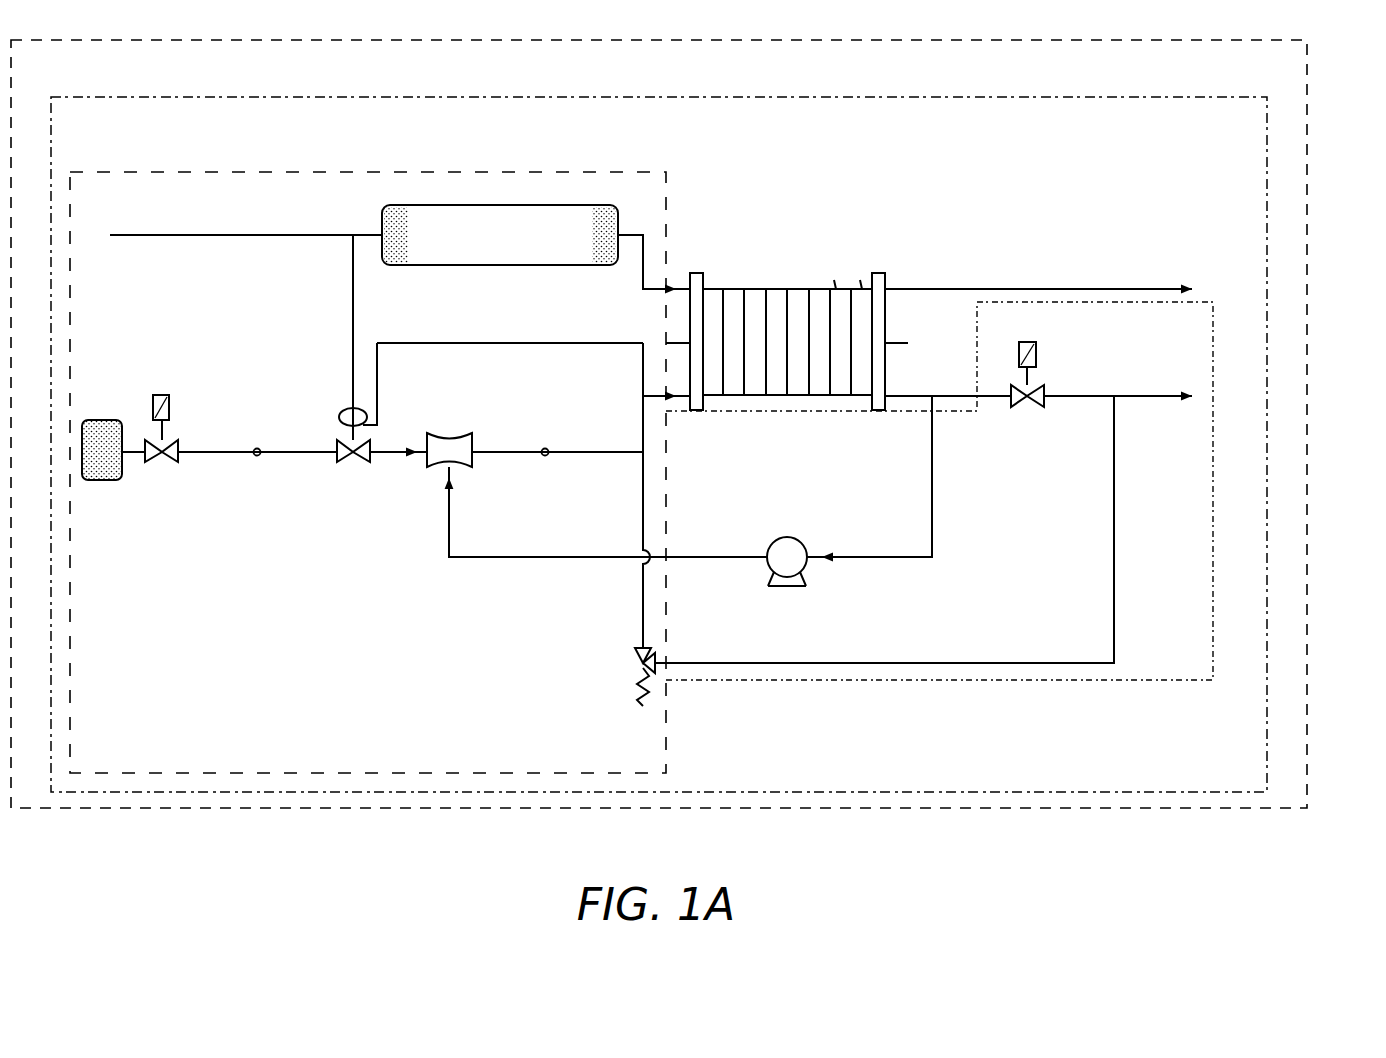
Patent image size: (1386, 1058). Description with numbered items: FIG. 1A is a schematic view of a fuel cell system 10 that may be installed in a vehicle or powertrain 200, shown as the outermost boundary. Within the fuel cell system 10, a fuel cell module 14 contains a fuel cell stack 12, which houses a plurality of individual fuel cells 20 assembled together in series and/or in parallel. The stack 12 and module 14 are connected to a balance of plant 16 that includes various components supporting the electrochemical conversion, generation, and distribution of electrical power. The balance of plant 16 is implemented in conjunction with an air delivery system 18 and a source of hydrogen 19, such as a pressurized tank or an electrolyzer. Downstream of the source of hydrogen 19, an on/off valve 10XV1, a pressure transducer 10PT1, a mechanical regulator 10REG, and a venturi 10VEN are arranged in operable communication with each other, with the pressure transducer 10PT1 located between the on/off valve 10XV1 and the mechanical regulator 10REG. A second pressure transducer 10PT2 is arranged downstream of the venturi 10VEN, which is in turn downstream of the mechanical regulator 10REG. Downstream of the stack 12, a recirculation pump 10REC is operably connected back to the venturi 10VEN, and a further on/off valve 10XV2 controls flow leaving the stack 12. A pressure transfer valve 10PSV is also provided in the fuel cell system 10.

The vehicle 200 is at (1323, 148).
The fuel cell system 10 is at (1273, 238).
The balance of plant 16 is at (411, 170).
The air delivery system 18 is at (513, 273).
The fuel cell module 14 is at (787, 278).
The fuel cell stack 12 is at (872, 286).
The fuel cell 20 is at (836, 277).
The source of hydrogen 19 is at (104, 419).
The on/off valve 10XV1 is at (162, 472).
The pressure transducer 10PT1 is at (257, 470).
The mechanical regulator 10REG is at (356, 470).
The venturi 10VEN is at (455, 429).
The second pressure transducer 10PT2 is at (545, 466).
The recirculation pump 10REC is at (790, 591).
The pressure transfer valve 10PSV is at (628, 668).
The further on/off valve 10XV2 is at (1025, 416).